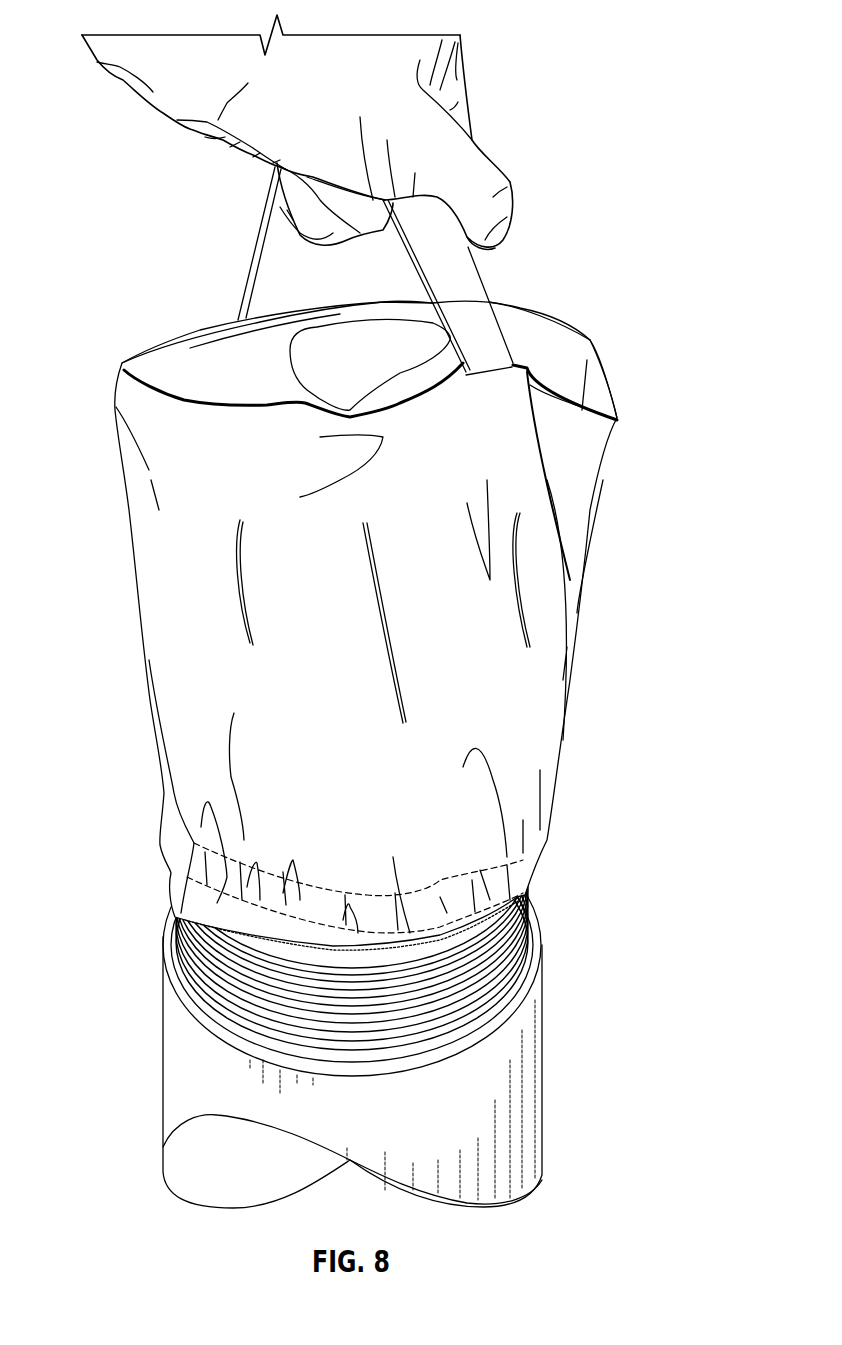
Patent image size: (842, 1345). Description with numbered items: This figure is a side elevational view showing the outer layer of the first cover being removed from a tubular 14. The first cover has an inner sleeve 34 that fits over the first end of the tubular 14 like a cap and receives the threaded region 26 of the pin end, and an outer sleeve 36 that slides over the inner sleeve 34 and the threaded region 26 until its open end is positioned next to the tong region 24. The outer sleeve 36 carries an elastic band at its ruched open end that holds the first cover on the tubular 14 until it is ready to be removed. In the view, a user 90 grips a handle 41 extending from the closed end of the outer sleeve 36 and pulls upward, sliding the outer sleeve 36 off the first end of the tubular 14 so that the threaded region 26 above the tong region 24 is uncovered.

The tubular 14 is at (542, 1110).
The tong region 24 is at (177, 1072).
The threaded region 26 is at (183, 927).
The inner sleeve 34 is at (507, 947).
The outer sleeve 36 is at (140, 606).
The handle 41 is at (488, 292).
The user 90 is at (463, 63).